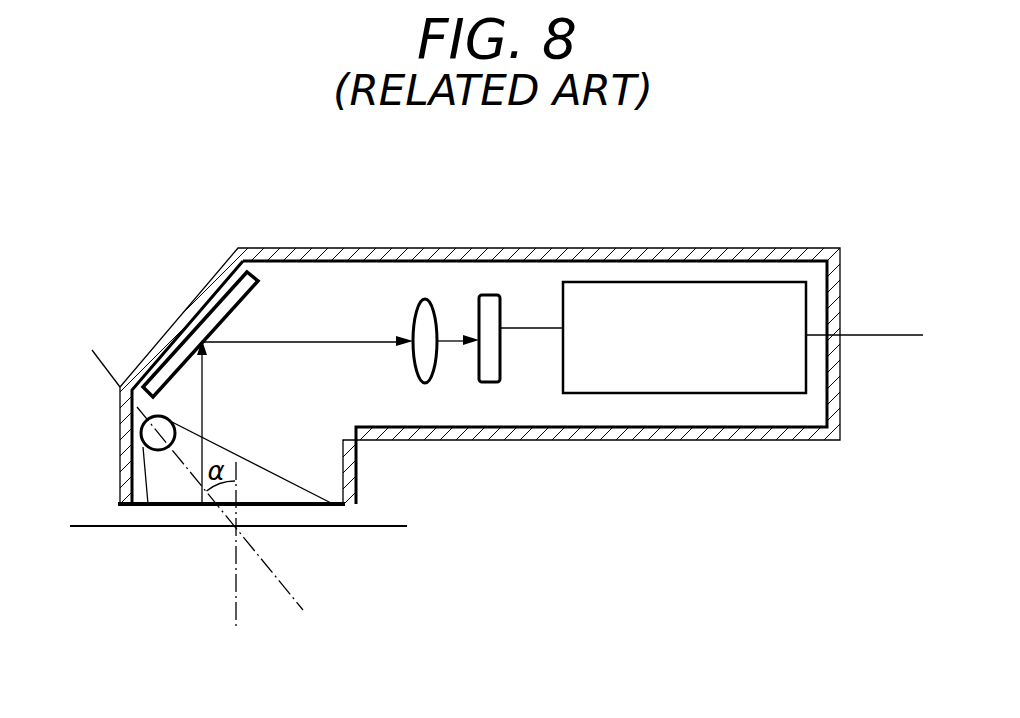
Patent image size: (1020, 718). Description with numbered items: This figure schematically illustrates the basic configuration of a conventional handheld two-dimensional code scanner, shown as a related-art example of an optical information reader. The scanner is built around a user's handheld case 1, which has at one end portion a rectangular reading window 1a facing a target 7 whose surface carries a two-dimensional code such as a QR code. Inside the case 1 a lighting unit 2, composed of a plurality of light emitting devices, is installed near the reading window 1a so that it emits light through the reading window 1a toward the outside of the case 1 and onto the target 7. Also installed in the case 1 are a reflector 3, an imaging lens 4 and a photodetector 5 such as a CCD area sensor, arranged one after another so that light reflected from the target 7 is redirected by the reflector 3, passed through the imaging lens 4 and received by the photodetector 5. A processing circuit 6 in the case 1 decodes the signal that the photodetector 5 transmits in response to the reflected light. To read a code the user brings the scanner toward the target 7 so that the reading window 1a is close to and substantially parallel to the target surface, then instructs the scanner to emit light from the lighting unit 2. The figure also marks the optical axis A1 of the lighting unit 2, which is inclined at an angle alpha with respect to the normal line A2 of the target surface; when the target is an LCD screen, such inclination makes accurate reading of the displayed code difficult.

The case 1 is at (433, 248).
The reading window 1a is at (318, 505).
The lighting unit 2 is at (141, 437).
The reflector 3 is at (254, 302).
The imaging lens 4 is at (422, 322).
The photodetector 5 is at (488, 295).
The processing circuit 6 is at (767, 282).
The target 7 is at (88, 526).
The optical axis of the lighting unit A1 is at (295, 597).
The normal line A2 is at (237, 618).